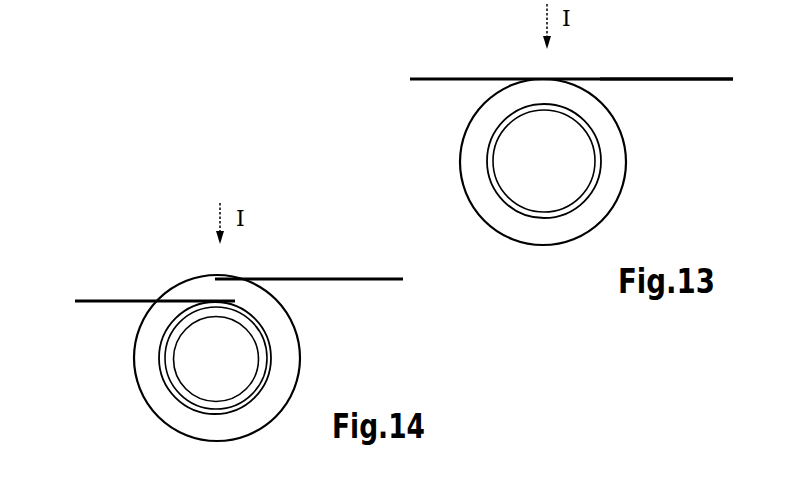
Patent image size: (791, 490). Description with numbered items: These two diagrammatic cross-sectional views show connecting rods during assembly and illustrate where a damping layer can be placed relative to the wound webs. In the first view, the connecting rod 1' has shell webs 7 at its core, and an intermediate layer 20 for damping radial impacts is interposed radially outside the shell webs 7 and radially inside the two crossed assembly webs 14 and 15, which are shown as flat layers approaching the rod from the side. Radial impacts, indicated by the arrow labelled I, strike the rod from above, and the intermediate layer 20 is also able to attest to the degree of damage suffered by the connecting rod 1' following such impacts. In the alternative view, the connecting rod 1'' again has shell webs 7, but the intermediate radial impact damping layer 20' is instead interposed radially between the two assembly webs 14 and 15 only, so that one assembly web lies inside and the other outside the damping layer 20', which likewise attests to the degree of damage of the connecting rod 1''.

In FIG. 13, the assembly web 14 is at (440, 77).
In FIG. 14, the assembly web 14 is at (108, 300).
In FIG. 13, the assembly web 15 is at (683, 78).
In FIG. 14, the assembly web 15 is at (353, 278).
In FIG. 13, the shell web 7 is at (490, 165).
In FIG. 14, the shell web 7 is at (246, 325).
In FIG. 13, the intermediate layer 20 is at (574, 162).
In FIG. 14, the intermediate radial impact damping layer 20' is at (248, 358).
In FIG. 13, the connecting rod 1' is at (561, 162).
In FIG. 14, the connecting rod 1'' is at (195, 358).